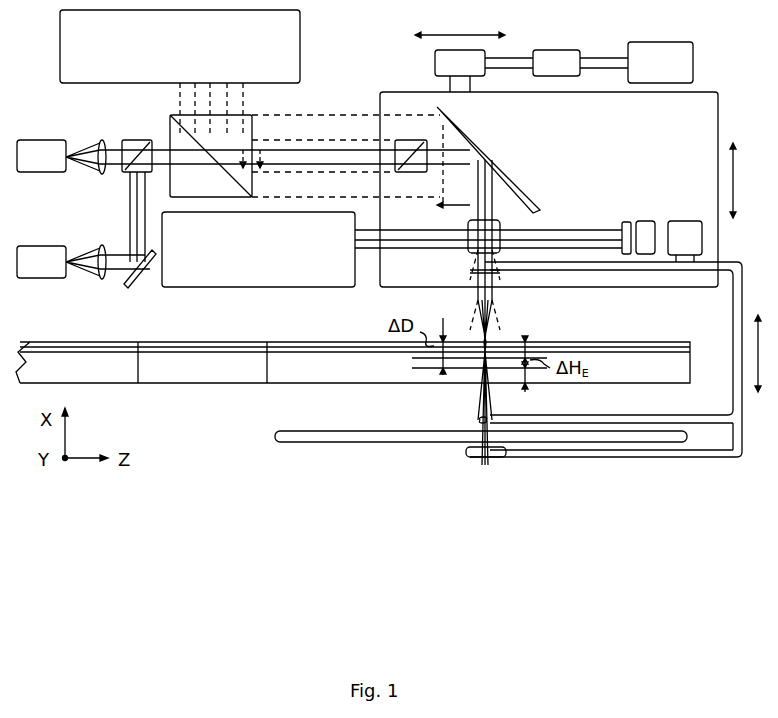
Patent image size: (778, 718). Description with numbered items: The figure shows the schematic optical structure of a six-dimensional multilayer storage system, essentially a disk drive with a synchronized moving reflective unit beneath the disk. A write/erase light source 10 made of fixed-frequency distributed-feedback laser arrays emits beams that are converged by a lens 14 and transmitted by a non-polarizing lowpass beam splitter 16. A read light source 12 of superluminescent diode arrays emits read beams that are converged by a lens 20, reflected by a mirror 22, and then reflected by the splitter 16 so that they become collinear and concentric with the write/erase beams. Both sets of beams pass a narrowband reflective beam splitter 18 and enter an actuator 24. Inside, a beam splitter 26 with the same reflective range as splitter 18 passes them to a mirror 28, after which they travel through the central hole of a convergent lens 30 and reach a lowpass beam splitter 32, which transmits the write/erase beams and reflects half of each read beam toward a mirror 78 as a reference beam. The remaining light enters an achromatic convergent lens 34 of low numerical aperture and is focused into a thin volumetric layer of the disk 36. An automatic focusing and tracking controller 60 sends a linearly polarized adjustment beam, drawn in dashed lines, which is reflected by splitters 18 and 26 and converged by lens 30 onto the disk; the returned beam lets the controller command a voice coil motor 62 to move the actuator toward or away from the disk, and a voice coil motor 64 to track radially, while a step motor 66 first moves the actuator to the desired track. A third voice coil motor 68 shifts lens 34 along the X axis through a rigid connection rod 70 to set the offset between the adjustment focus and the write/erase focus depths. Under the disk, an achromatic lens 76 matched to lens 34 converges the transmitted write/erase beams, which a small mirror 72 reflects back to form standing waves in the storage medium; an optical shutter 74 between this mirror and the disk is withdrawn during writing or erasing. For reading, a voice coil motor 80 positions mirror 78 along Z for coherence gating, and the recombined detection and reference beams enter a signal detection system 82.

The write/erase light source 10 is at (44, 175).
The read light source 12 is at (44, 282).
The lens 14 is at (100, 140).
The non-polarizing and lowpass beam splitter 16 is at (134, 140).
The non-polarizing and narrowband reflective beam splitter 18 is at (255, 128).
The lens 20 is at (104, 280).
The mirror 22 is at (148, 280).
The actuator 24 is at (718, 118).
The beam splitter 26 is at (416, 143).
The mirror 28 is at (492, 137).
The convergent lens 30 is at (446, 210).
The non-polarizing and lowpass beam splitter 32 is at (465, 250).
The convergent lens 34 is at (478, 268).
The disk 36 is at (307, 342).
The automatic focusing and tracking controller 60 is at (60, 66).
The voice coil motor 62 is at (435, 62).
The voice coil motor 64 is at (556, 50).
The step motor 66 is at (656, 42).
The third voice coil motor 68 is at (682, 220).
The rigid connection rod 70 is at (733, 318).
The small mirror 72 is at (476, 459).
The optical shutter 74 is at (285, 431).
The achromatic lens 76 is at (478, 420).
The mirror 78 is at (620, 222).
The voice coil motor 80 is at (642, 222).
The signal detection system 82 is at (292, 287).